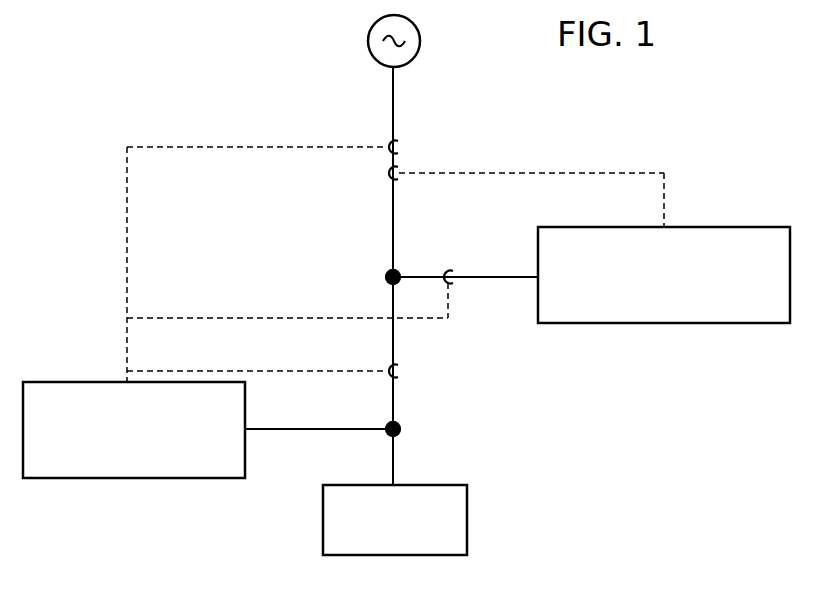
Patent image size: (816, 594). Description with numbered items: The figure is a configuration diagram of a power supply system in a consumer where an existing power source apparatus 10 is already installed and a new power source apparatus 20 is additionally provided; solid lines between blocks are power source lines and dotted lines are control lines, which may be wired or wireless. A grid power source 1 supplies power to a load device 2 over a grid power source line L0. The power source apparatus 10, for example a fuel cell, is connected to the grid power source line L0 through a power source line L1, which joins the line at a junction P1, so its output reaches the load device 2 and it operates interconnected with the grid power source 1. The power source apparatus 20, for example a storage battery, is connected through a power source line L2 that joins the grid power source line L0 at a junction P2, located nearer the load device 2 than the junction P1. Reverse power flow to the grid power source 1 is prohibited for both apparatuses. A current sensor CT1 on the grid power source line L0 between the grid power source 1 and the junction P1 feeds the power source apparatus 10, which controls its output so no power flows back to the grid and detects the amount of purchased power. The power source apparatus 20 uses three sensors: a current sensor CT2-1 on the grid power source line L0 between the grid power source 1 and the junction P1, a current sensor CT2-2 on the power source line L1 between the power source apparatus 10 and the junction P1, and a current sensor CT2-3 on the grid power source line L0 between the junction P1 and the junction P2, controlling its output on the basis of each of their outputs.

The grid power source 1 is at (368, 38).
The load device 2 is at (470, 525).
The power source apparatus 10 is at (728, 227).
The power source apparatus 20 is at (72, 382).
The grid power source line L0 is at (378, 104).
The power source line L1 is at (469, 264).
The power source line L2 is at (315, 417).
The junction P1 is at (386, 272).
The junction P2 is at (402, 427).
The current sensor CT1 is at (387, 173).
The current sensor CT2-1 is at (400, 143).
The current sensor CT2-2 is at (452, 270).
The current sensor CT2-3 is at (387, 368).